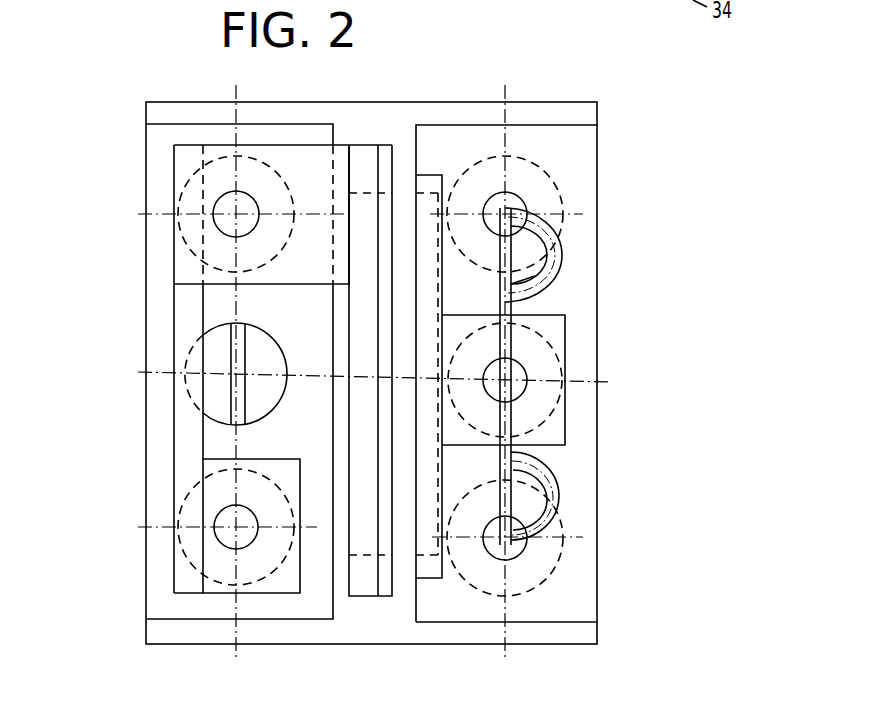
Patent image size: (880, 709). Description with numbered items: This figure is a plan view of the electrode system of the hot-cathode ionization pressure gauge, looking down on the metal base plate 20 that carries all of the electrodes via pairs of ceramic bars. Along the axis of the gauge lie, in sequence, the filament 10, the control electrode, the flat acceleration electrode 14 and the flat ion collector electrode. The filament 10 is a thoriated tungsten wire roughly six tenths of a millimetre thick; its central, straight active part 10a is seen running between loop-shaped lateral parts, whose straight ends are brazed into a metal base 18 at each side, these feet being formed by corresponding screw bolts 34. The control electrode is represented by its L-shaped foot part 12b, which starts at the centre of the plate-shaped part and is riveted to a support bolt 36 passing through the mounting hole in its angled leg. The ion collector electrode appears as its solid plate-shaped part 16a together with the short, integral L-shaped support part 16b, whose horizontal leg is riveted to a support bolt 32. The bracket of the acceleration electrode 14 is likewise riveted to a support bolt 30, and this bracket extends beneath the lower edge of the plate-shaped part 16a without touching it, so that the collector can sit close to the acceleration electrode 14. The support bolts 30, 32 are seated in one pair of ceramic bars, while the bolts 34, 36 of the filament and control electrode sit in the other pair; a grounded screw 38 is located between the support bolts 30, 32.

The filament 10 is at (557, 233).
The active part 10a is at (508, 417).
The L-shaped foot part 12b is at (553, 330).
The acceleration electrode 14 is at (357, 155).
The plate-shaped part 16a is at (153, 141).
The L-shaped support part 16b is at (215, 563).
The metal base 18 is at (540, 197).
The metal base plate 20 is at (572, 118).
The support bolt 30 is at (222, 221).
The support bolt 32 is at (227, 520).
The screw bolt 34 is at (517, 550).
The support bolt 36 is at (523, 387).
The grounded screw 38 is at (215, 362).